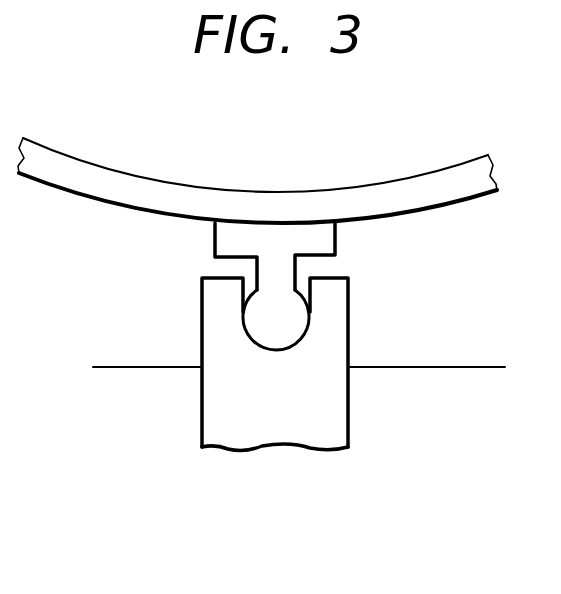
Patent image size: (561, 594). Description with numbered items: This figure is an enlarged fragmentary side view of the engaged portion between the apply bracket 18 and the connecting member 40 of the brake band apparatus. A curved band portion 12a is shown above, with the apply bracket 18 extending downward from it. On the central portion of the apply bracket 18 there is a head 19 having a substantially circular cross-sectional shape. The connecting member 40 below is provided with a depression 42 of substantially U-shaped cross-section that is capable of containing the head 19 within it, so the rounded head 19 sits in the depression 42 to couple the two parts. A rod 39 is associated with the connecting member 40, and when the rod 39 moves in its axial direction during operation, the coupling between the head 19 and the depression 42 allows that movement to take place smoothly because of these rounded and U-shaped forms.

The curved panel / member 12a is at (283, 208).
The apply bracket 18 is at (223, 239).
The head 19 is at (278, 300).
The rod 39 is at (423, 398).
The connecting member 40 is at (265, 415).
The depression 42 is at (280, 351).